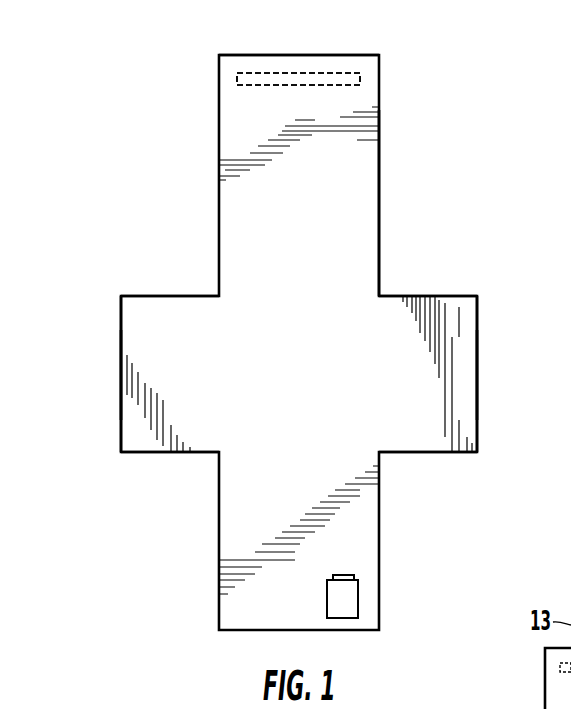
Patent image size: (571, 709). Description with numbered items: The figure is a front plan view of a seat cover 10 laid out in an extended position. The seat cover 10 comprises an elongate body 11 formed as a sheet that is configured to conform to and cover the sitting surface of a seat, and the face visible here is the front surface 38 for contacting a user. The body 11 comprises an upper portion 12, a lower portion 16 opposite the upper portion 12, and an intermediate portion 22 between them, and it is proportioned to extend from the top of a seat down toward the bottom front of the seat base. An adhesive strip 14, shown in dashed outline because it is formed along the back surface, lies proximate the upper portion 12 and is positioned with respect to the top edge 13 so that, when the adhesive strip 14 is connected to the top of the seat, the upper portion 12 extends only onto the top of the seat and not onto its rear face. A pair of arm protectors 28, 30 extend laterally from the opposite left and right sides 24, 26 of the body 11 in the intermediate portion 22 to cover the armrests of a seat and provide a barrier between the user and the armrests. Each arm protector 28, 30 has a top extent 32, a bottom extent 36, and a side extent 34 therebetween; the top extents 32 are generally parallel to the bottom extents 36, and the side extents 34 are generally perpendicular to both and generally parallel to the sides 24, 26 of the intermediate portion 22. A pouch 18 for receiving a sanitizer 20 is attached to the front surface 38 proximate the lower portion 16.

The seat cover 10 is at (138, 79).
The elongate body 11 is at (318, 226).
The upper portion 12 is at (366, 76).
The top edge 13 is at (262, 55).
The adhesive strip 14 is at (318, 83).
The lower portion 16 is at (237, 586).
The pouch 18 is at (343, 598).
The sanitizer 20 is at (345, 575).
The intermediate portion 22 is at (272, 330).
The left side 24 is at (219, 200).
The right side 26 is at (380, 200).
The arm protector 28 is at (150, 332).
The arm protector 30 is at (430, 372).
The top extent 32 is at (160, 295).
The side extent 34 is at (121, 400).
The bottom extent 36 is at (157, 452).
The front surface 38 is at (258, 410).